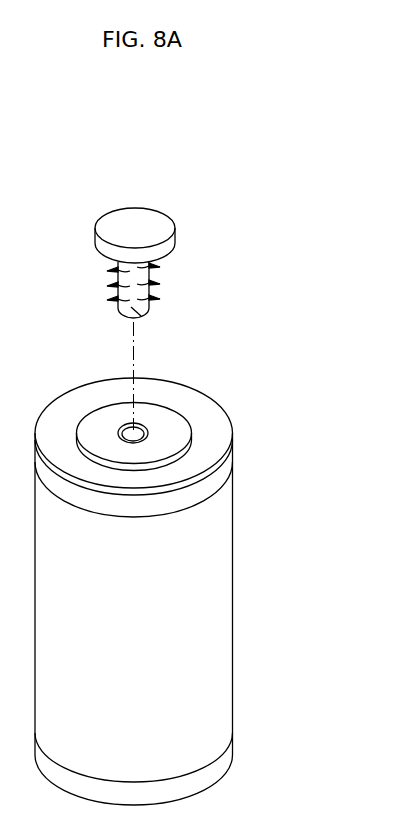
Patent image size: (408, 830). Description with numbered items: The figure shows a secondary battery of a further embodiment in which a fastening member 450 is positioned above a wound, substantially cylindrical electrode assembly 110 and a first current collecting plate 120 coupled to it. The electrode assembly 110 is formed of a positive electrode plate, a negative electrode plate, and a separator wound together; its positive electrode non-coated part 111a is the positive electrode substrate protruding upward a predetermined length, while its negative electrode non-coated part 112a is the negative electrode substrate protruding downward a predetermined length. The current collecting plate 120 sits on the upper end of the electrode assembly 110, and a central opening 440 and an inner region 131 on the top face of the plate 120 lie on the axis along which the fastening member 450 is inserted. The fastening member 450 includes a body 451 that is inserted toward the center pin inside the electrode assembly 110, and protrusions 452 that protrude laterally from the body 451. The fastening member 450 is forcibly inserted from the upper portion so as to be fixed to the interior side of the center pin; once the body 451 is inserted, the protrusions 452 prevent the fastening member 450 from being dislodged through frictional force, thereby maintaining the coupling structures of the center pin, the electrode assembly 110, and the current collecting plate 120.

The electrode assembly 110 is at (254, 622).
The positive electrode non-coated part 111a is at (225, 470).
The negative electrode non-coated part 112a is at (222, 757).
The first current collecting plate 120 is at (215, 437).
The terminal 131 is at (178, 432).
The fastening hole 440 is at (150, 430).
The fastening member 450 is at (135, 215).
The body 451 is at (150, 317).
The protrusion 452 is at (152, 275).